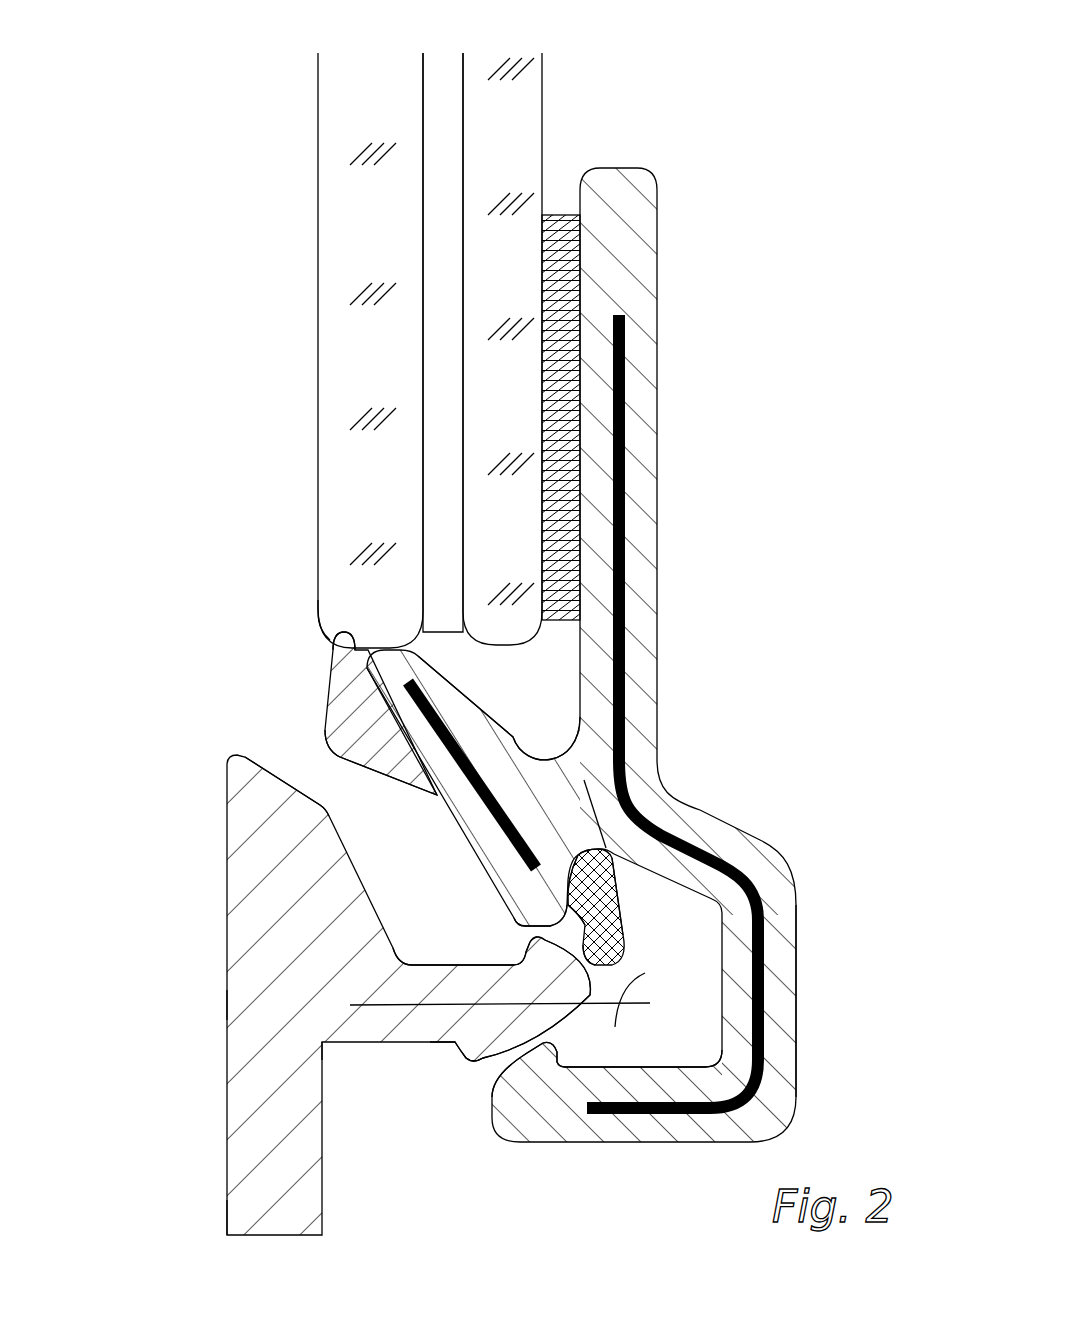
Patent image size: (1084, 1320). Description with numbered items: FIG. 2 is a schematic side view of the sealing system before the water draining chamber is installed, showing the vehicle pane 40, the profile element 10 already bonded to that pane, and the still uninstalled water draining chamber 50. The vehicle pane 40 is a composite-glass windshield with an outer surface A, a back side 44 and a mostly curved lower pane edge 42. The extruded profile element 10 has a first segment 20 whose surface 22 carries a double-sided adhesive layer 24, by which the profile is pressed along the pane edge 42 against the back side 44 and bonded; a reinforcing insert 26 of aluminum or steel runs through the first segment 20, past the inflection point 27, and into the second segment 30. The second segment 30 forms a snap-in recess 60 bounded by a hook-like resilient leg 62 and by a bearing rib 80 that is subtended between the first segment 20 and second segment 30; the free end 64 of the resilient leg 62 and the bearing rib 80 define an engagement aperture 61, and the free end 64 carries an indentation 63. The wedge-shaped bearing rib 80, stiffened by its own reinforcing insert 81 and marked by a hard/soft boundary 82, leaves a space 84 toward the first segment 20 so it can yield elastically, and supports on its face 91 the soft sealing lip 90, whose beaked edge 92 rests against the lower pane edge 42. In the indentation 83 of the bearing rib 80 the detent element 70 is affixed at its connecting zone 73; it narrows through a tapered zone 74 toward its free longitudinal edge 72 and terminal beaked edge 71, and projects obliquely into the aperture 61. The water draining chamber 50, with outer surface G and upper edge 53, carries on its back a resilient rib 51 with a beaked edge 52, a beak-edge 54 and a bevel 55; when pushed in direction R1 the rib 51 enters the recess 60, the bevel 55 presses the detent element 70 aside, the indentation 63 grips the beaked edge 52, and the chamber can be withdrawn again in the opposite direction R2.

The profile element 10 is at (215, 48).
The first segment 20 is at (685, 520).
The surface 22 is at (544, 72).
The adhesive layer/tape 24 is at (582, 232).
The reinforcing insert 26 is at (626, 350).
The inflection point 27 is at (584, 894).
The second segment 30 is at (846, 1050).
The vehicle pane 40 is at (368, 258).
The lower pane edge 42 is at (358, 625).
The back side 44 is at (545, 352).
The water draining chamber 50 is at (213, 1153).
The rib 51 is at (500, 1034).
The beaked edge 52 is at (440, 1062).
The upper edge 53 is at (293, 787).
The beak-edge/indentation 54 is at (523, 946).
The bevel/flank 55 is at (480, 1062).
The snap-in recess 60 is at (700, 1059).
The engagement aperture 61 is at (583, 1035).
The resilient leg 62 is at (550, 1115).
The indentation 63 is at (548, 1064).
The free end 64 is at (536, 1048).
The detent element 70 is at (624, 948).
The beaked edge 71 is at (592, 962).
The free longitudinal edge 72 is at (609, 925).
The connecting zone 73 is at (569, 917).
The tapered zone 74 is at (607, 926).
The bearing rib 80 is at (482, 865).
The reinforcing insert 81 is at (522, 835).
The hard/soft boundary 82 is at (413, 740).
The indentation 83 is at (574, 900).
The space 84 is at (520, 672).
The seal 90 is at (330, 680).
The face 91 is at (390, 713).
The beaked edge 92 is at (330, 638).
The outer surface A is at (318, 110).
The outer surface G is at (226, 1225).
The direction R1 is at (333, 1006).
The direction R2 is at (200, 1005).